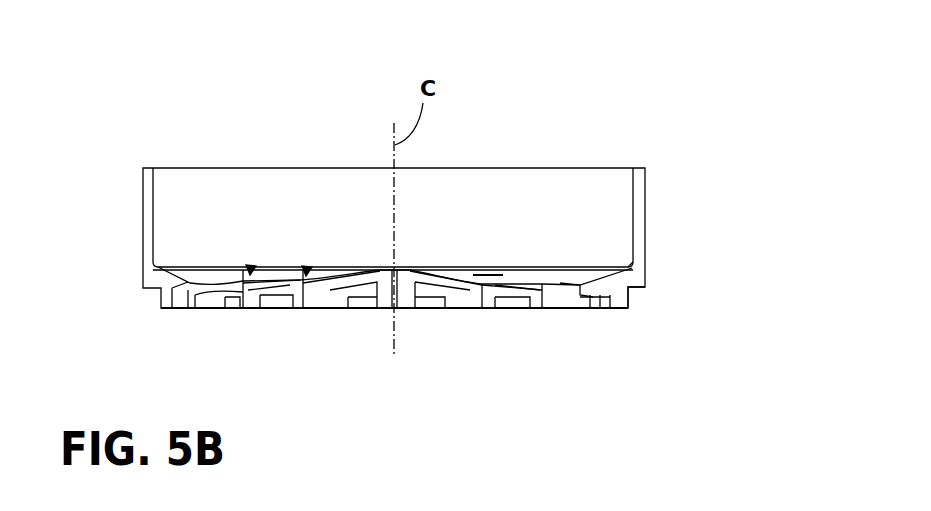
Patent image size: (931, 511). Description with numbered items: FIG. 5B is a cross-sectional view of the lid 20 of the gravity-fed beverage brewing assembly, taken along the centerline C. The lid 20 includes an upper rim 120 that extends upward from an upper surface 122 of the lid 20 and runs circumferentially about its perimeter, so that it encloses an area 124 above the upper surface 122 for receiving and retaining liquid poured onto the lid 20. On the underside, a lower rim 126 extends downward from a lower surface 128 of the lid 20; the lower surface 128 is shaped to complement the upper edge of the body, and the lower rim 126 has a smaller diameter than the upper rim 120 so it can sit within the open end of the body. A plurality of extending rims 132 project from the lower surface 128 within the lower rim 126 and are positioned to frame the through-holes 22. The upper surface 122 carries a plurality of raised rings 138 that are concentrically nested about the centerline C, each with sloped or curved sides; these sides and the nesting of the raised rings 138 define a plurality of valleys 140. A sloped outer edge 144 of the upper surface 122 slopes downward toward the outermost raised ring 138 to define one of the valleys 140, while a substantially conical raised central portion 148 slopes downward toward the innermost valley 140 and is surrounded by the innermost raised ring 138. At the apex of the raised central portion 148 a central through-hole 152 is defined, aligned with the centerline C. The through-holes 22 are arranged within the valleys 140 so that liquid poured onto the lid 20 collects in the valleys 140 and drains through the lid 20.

The lid 20 is at (662, 88).
The through-holes 22 is at (238, 315).
The upper rim 120 is at (648, 200).
The upper surface 122 is at (583, 276).
The area 124 is at (610, 182).
The lower rim 126 is at (627, 306).
The lower surface 128 is at (632, 288).
The extending rims 132 is at (247, 309).
The raised rings 138 is at (228, 285).
The valleys 140 is at (250, 273).
The sloped outer edge 144 is at (190, 267).
The raised central portion 148 is at (427, 282).
The central through-hole 152 is at (383, 318).